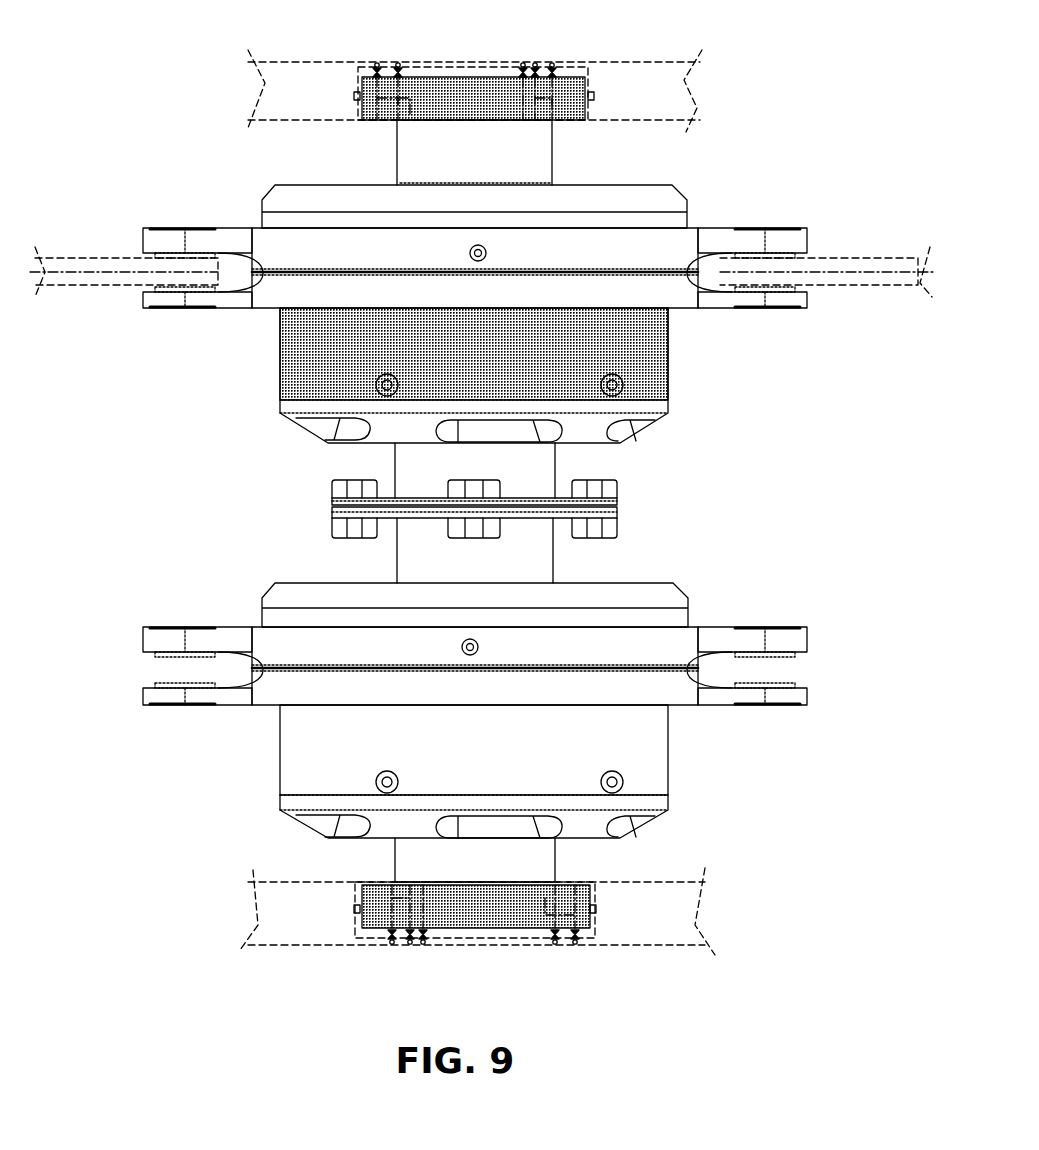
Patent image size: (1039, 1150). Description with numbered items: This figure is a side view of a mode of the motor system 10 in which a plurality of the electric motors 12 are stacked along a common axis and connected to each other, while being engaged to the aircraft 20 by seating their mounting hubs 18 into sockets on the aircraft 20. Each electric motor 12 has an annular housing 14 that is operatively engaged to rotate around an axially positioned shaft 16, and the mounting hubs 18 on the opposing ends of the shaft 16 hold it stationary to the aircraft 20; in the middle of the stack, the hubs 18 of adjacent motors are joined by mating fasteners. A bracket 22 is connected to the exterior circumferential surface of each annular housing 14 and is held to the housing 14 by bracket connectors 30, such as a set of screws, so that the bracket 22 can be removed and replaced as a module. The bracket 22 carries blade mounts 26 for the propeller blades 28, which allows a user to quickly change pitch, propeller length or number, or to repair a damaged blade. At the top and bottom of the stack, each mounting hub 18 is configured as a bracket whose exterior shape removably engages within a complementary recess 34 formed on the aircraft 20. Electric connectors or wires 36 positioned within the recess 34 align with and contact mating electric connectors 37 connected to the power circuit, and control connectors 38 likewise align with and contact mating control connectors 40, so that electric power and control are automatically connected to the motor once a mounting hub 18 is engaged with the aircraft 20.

The motor system 10 is at (168, 178).
The electric motor 12 is at (687, 198).
The annular housing 14 is at (668, 373).
The axially positioned shaft 16 is at (548, 165).
The mounting hub 18 is at (463, 83).
The aircraft 20 is at (640, 83).
The bracket 22 is at (662, 295).
The blade mount 26 is at (780, 237).
The propeller blade 28 is at (845, 267).
The bracket connector 30 is at (478, 261).
The recess 34 is at (437, 78).
The electric connector 36 is at (376, 67).
The mating electric connector 37 is at (399, 66).
The control connector 38 is at (553, 66).
The mating control connector 40 is at (524, 66).